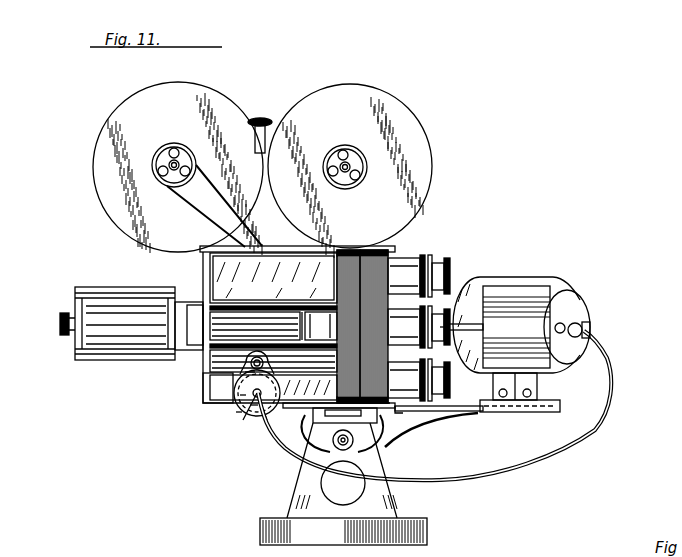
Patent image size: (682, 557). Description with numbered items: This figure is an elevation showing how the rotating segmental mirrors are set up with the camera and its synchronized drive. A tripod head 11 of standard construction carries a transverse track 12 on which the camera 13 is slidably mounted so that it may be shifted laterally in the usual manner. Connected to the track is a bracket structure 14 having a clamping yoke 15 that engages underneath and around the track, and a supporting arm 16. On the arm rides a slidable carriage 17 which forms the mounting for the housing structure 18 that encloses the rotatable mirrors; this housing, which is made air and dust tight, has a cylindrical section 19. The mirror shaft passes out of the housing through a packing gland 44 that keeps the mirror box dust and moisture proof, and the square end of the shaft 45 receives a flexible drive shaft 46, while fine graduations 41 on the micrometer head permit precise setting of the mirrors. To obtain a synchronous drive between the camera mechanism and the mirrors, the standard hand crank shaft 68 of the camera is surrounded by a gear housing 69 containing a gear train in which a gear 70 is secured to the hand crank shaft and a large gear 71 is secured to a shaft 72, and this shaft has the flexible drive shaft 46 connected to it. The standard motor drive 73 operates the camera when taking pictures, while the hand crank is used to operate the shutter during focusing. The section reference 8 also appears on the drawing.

The axis line 8 is at (445, 325).
The tripod head 11 is at (290, 505).
The transverse track 12 is at (377, 444).
The camera 13 is at (390, 263).
The bracket structure 14 is at (396, 444).
The clamping yoke 15 is at (313, 447).
The supporting arm 16 is at (433, 420).
The slidable carriage 17 is at (500, 413).
The housing structure 18 is at (580, 283).
The cylindrical section 19 is at (540, 297).
The fine graduations 41 is at (590, 322).
The packing gland 44 is at (558, 343).
The end of the shaft 45 is at (614, 383).
The flexible drive shaft 46 is at (279, 452).
The hand crank shaft 68 is at (245, 376).
The gear housing 69 is at (242, 394).
The gear 70 is at (248, 362).
The large gear 71 is at (236, 414).
The shaft 72 is at (250, 407).
The motor drive 73 is at (140, 347).